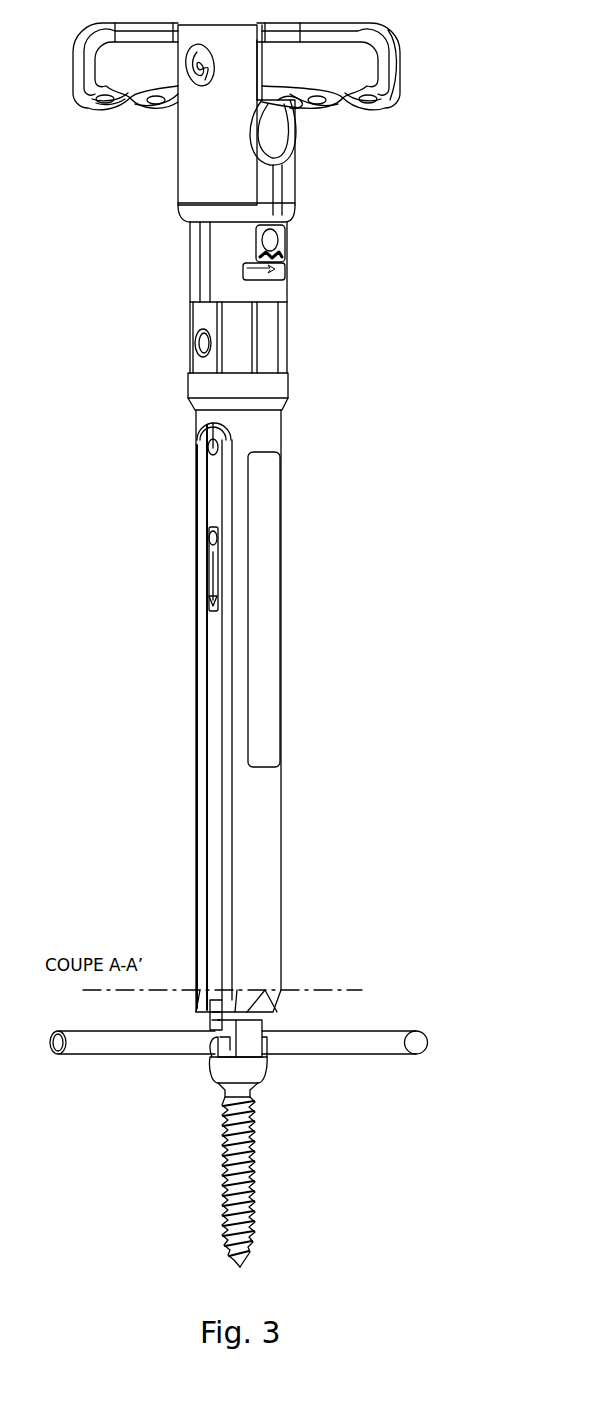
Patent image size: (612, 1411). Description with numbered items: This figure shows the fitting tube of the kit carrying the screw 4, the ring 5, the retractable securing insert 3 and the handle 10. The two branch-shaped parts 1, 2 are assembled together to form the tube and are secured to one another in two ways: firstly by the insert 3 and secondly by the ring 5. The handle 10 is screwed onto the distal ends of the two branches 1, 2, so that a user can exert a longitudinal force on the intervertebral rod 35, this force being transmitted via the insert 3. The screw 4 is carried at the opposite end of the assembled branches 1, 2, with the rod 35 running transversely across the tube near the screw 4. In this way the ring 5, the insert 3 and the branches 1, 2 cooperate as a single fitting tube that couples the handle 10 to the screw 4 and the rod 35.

The handle 10 is at (396, 62).
The ring 5 is at (284, 250).
The branch-shaped part 1 is at (272, 800).
The branch-shaped part 2 is at (196, 800).
The retractable securing insert 3 is at (215, 673).
The intervertebral rod 35 is at (418, 1033).
The screw 4 is at (255, 1065).